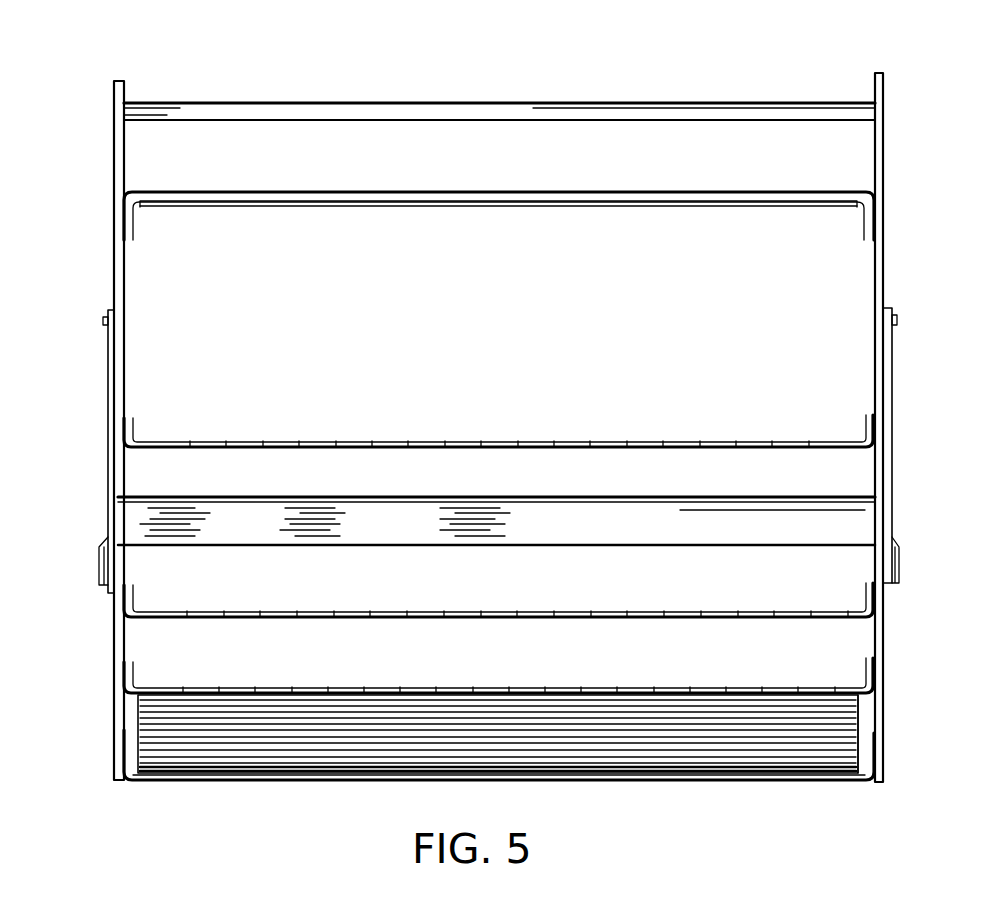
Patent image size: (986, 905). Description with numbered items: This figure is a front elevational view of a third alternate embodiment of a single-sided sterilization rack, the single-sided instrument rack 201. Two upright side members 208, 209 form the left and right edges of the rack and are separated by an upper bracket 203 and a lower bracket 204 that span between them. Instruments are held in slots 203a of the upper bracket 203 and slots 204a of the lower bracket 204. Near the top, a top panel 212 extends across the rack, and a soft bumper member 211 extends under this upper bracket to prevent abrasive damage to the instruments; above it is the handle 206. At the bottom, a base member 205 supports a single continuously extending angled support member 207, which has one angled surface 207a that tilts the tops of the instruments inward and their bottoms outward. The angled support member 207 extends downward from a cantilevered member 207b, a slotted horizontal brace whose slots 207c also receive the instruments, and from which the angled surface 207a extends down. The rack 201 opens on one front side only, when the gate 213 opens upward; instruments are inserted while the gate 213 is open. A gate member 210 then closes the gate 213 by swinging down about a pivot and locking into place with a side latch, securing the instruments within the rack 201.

The single-sided instrument rack 201 is at (902, 130).
The bracket 203 is at (845, 443).
The slot 203a is at (220, 445).
The bracket 204 is at (843, 612).
The slot 204a is at (210, 615).
The base member 205 is at (793, 778).
The handle 206 is at (497, 108).
The angled support member 207 is at (840, 728).
The angled surface 207a is at (725, 735).
The cantilevered member 207b is at (827, 692).
The slot 207c is at (710, 690).
The side member 208 is at (115, 278).
The side member 209 is at (884, 292).
The gate member 210 is at (105, 458).
The soft bumper member 211 is at (487, 207).
The top panel 212 is at (812, 193).
The gate 213 is at (837, 518).